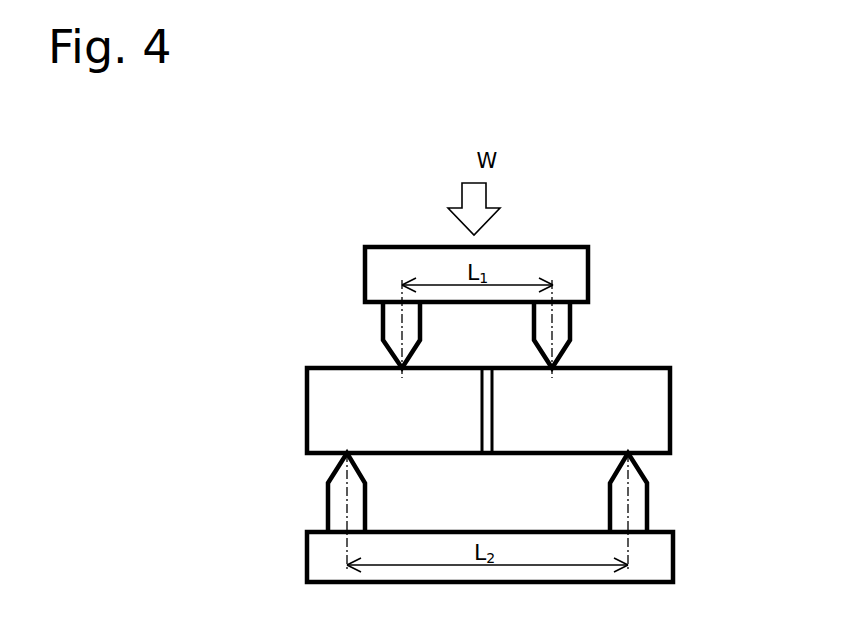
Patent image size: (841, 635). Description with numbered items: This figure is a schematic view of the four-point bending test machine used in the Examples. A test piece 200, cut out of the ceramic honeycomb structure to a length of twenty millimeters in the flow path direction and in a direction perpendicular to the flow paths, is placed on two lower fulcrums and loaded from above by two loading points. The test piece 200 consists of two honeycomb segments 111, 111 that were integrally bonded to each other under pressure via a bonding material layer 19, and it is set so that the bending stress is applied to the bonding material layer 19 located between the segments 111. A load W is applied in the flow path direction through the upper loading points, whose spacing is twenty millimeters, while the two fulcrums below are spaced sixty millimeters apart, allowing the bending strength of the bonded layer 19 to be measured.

The test piece 200 is at (308, 368).
The honeycomb segment 111 is at (320, 405).
The bonding material layer 19 is at (482, 368).